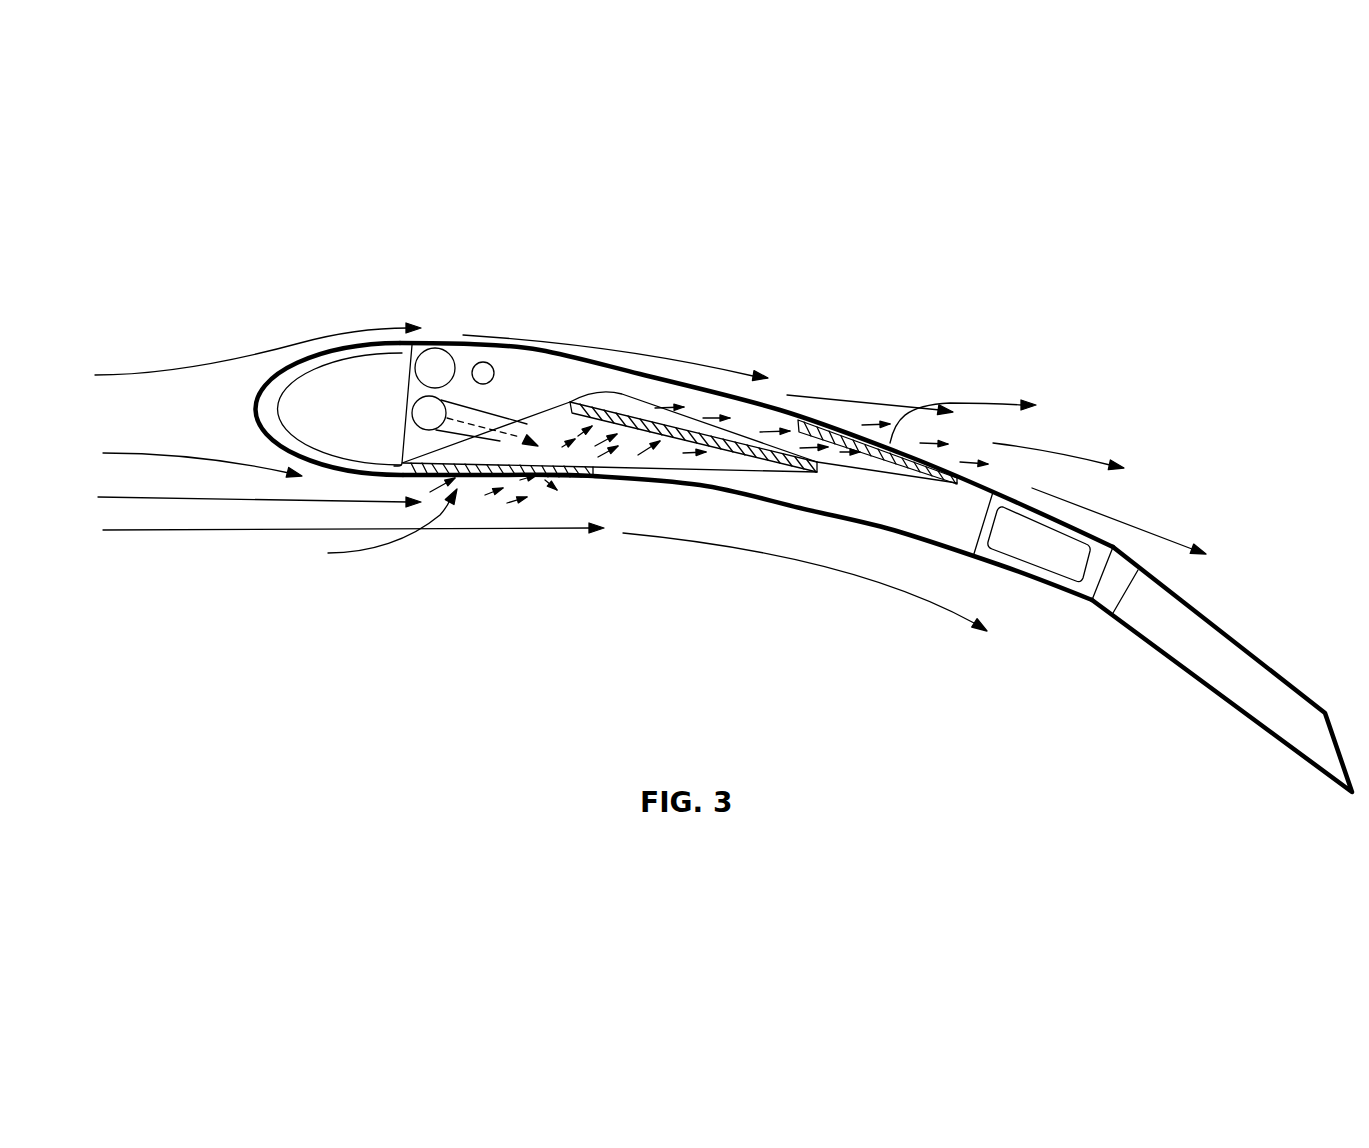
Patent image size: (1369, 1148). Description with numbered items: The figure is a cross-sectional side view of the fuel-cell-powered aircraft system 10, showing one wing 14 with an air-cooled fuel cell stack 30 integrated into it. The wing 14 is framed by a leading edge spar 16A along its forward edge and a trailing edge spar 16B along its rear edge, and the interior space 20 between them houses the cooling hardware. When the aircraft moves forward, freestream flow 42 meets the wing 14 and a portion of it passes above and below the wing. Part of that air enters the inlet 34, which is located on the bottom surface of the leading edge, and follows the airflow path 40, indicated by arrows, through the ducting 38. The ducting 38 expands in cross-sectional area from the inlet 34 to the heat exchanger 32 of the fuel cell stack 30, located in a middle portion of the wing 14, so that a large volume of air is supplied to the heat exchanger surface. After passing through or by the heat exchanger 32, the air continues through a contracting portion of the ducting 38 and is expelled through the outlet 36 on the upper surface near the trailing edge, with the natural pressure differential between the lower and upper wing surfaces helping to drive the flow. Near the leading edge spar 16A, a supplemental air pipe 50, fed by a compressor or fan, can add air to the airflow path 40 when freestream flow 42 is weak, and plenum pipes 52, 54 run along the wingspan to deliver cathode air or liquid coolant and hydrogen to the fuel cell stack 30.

The fuel-cell-powered aircraft system 10 is at (160, 217).
The wing 14 is at (845, 278).
The leading edge spar 16A is at (307, 357).
The trailing edge spar 16B is at (1102, 538).
The interior space 20 is at (888, 508).
The fuel cell stack 30 is at (632, 391).
The heat exchanger 32 is at (637, 420).
The inlet 34 is at (477, 478).
The outlet 36 is at (822, 430).
The ducting 38 is at (703, 400).
The airflow path 40 is at (990, 398).
The freestream flow 42 is at (79, 466).
The supplemental air pipe 50 is at (393, 355).
The plenum pipe 52 is at (424, 412).
The plenum pipe 54 is at (486, 363).